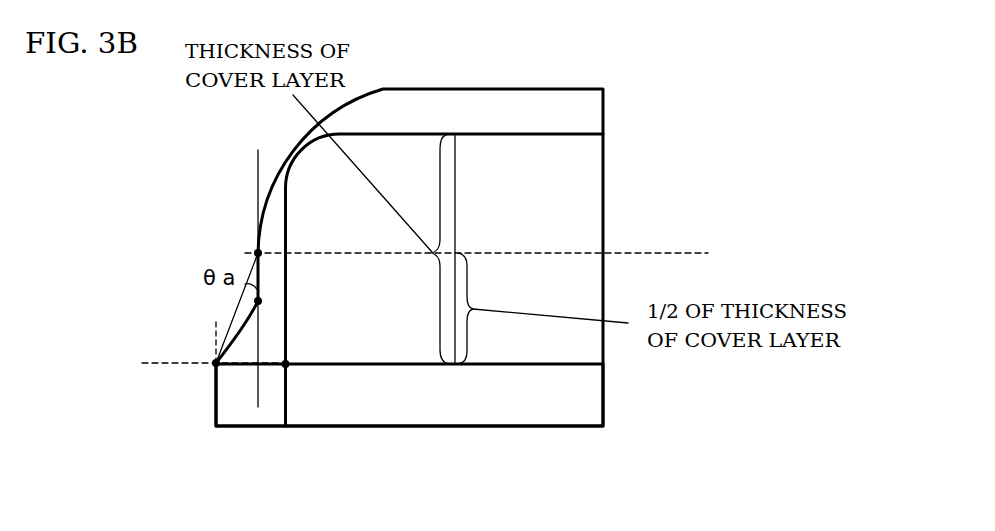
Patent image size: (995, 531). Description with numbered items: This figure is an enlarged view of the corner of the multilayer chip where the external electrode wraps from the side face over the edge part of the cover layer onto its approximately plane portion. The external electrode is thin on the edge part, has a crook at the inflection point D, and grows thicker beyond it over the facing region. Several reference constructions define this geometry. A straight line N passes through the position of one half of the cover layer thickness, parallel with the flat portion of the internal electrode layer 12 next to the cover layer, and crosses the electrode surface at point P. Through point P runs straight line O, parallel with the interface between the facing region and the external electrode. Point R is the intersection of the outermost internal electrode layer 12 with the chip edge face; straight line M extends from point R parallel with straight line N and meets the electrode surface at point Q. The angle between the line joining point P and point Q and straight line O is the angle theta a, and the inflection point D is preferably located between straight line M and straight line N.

The internal electrode layer 12 is at (525, 364).
The straight line O is at (258, 268).
The straight line N is at (487, 256).
The straight line M is at (203, 365).
The point P is at (248, 240).
The point Q is at (207, 377).
The inflection point D is at (260, 303).
The point R is at (286, 365).